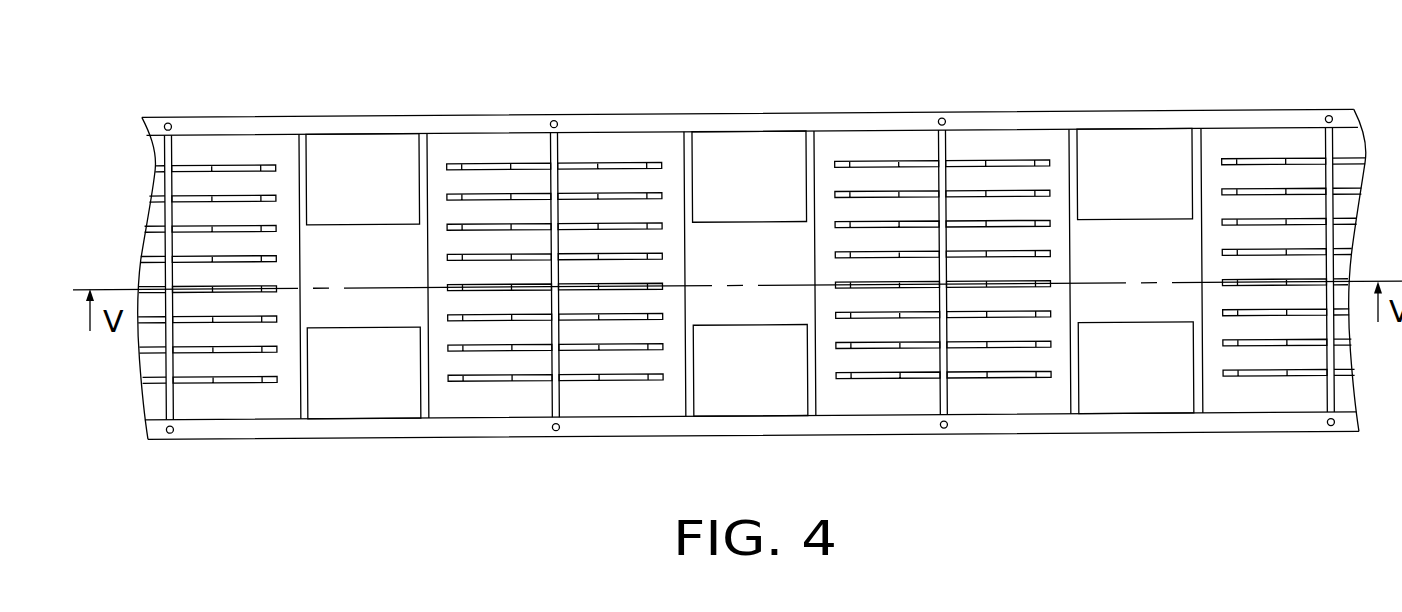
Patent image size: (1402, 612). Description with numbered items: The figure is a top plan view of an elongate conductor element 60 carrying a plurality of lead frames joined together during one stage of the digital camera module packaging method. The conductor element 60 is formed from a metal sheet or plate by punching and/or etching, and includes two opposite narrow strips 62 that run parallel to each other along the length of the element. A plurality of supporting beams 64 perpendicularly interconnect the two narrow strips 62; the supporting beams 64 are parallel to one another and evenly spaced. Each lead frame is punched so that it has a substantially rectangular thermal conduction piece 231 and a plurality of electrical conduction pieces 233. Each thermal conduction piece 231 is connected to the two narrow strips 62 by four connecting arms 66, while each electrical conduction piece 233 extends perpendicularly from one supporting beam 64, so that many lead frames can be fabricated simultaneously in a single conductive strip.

The conductor element 60 is at (1037, 96).
The narrow strips 62 is at (747, 122).
The supporting beams 64 is at (555, 150).
The connecting arms 66 is at (425, 152).
The thermal conduction piece 231 is at (343, 255).
The electrical conduction pieces 233 is at (492, 163).